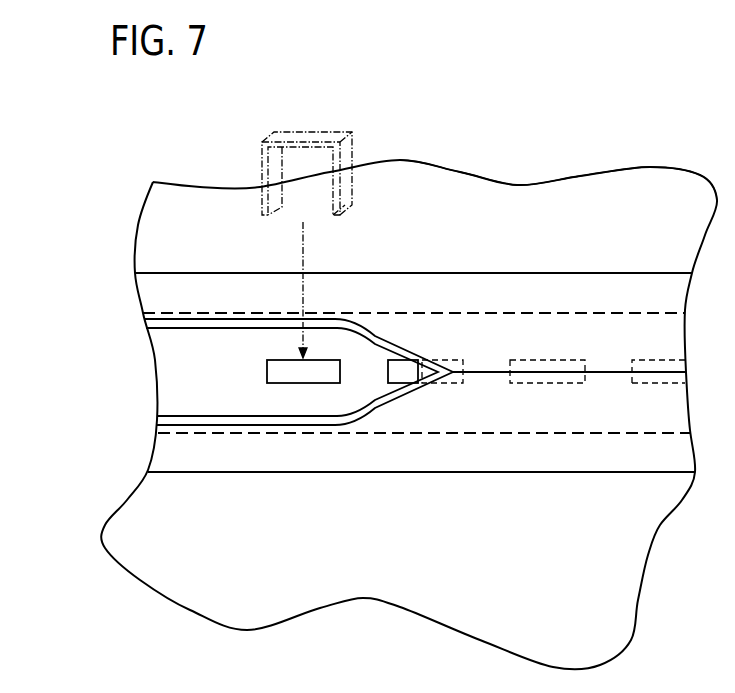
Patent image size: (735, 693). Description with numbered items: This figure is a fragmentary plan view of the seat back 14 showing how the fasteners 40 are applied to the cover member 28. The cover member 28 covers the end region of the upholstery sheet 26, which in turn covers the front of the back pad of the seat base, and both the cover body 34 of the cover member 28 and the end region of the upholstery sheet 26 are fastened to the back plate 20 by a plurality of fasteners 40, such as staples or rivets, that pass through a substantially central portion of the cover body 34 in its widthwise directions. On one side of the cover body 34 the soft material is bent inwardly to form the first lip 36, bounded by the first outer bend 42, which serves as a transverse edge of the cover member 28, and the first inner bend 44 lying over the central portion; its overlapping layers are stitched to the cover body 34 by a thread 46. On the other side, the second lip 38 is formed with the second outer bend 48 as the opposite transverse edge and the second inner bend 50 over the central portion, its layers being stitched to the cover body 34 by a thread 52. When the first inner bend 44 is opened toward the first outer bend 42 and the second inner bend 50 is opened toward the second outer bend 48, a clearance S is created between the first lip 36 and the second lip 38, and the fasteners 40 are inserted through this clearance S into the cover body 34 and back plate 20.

The seat back 14 is at (561, 97).
The back plate 20 is at (630, 568).
The upholstery sheet 26 is at (630, 181).
The cover member 28 is at (607, 272).
The cover body 34 is at (168, 368).
The first lip 36 is at (170, 455).
The second lip 38 is at (155, 293).
The fasteners 40 is at (341, 131).
The first outer bend 42 is at (207, 474).
The first inner bend 44 is at (213, 416).
The thread 46 is at (528, 435).
The second outer bend 48 is at (210, 272).
The second inner bend 50 is at (217, 329).
The thread 52 is at (528, 310).
The clearance S is at (335, 403).